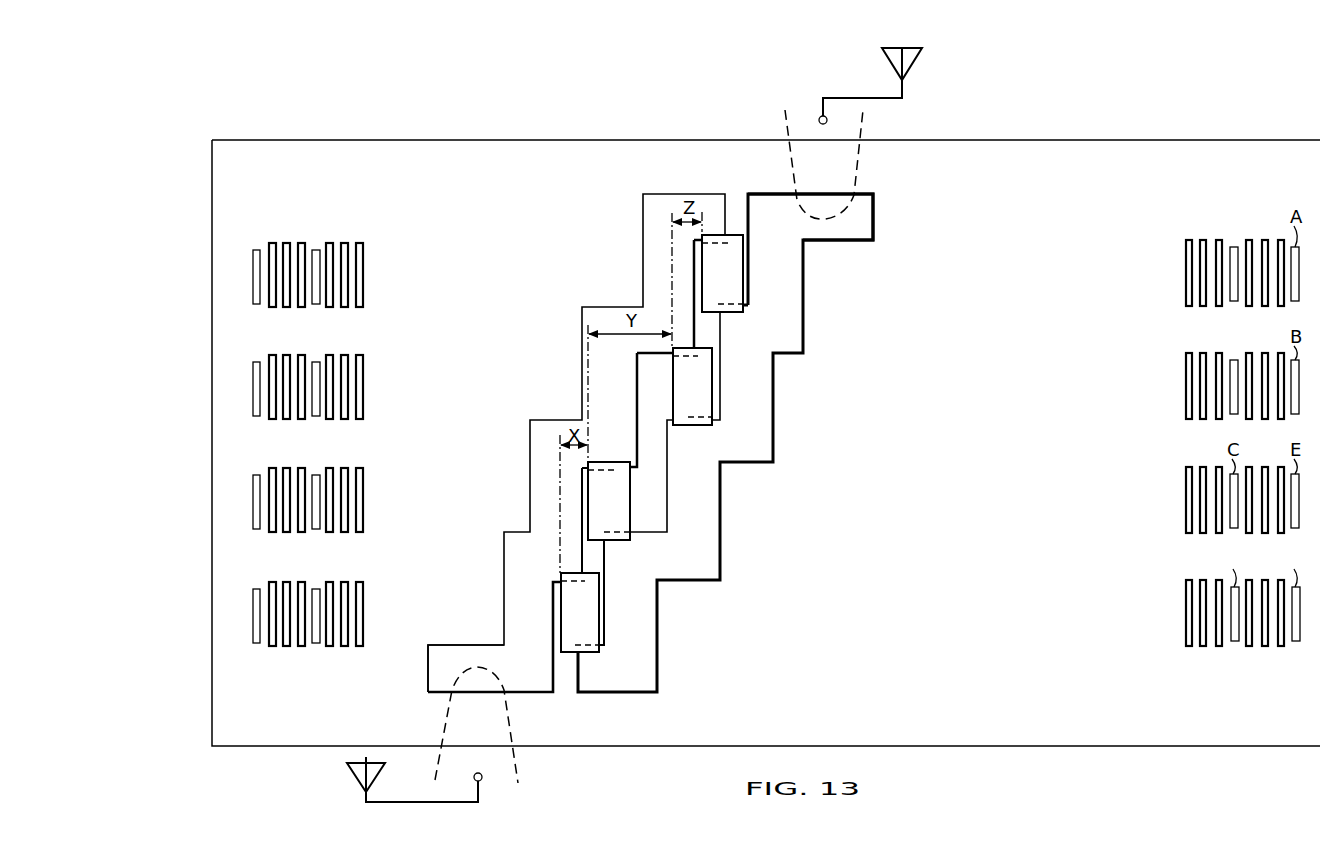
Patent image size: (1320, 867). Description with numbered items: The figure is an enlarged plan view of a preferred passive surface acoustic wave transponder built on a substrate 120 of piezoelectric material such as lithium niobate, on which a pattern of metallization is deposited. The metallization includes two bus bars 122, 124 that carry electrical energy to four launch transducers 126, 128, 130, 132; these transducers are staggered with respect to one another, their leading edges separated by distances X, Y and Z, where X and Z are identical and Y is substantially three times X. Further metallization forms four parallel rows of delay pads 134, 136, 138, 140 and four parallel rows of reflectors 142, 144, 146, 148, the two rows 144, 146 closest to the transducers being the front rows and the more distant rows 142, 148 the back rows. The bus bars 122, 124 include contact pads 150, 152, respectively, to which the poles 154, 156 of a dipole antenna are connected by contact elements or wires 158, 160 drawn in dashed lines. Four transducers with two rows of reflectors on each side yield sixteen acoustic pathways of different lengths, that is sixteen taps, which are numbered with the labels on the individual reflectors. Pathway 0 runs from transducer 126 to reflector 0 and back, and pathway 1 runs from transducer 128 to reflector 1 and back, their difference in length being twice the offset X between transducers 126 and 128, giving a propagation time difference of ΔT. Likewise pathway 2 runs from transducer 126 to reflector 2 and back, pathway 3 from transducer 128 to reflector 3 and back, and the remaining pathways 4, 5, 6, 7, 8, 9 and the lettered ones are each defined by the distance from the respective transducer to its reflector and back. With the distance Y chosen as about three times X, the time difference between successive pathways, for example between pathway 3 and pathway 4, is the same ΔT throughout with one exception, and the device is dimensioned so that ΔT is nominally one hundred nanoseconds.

The substrate 120 is at (1058, 140).
The bus bar 122 is at (679, 194).
The bus bar 124 is at (637, 693).
The launch transducer 126 is at (595, 621).
The launch transducer 128 is at (624, 510).
The launch transducer 130 is at (707, 396).
The launch transducer 132 is at (737, 283).
The row of delay pads 134 is at (303, 234).
The row of delay pads 136 is at (362, 234).
The row of delay pads 138 is at (1225, 649).
The row of delay pads 140 is at (1285, 649).
The row of reflectors 142 is at (254, 240).
The row of reflectors 144 is at (316, 240).
The row of reflectors 146 is at (1236, 650).
The row of reflectors 148 is at (1297, 650).
The contact pad 150 is at (492, 684).
The contact pad 152 is at (838, 232).
The pole of dipole antenna 154 is at (350, 774).
The pole of dipole antenna 156 is at (909, 57).
The contact element 158 is at (518, 722).
The contact element 160 is at (860, 167).
The pathway (tap) 0 / reflector 0 is at (316, 643).
The pathway (tap) 1 / reflector 1 is at (316, 529).
The pathway (tap) 2 / reflector 2 is at (257, 643).
The pathway (tap) 3 / reflector 3 is at (257, 529).
The pathway (tap) 4 / reflector 4 is at (316, 416).
The pathway (tap) 5 / reflector 5 is at (316, 304).
The pathway (tap) 6 / reflector 6 is at (257, 416).
The pathway (tap) 7 / reflector 7 is at (257, 304).
The pathway (tap) 8 / reflector 8 is at (1233, 247).
The pathway (tap) 9 / reflector 9 is at (1233, 360).